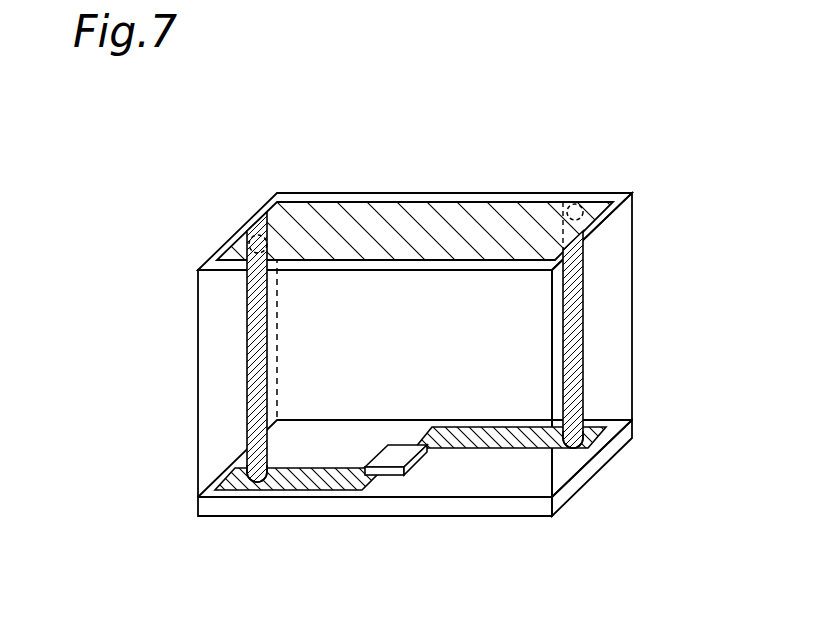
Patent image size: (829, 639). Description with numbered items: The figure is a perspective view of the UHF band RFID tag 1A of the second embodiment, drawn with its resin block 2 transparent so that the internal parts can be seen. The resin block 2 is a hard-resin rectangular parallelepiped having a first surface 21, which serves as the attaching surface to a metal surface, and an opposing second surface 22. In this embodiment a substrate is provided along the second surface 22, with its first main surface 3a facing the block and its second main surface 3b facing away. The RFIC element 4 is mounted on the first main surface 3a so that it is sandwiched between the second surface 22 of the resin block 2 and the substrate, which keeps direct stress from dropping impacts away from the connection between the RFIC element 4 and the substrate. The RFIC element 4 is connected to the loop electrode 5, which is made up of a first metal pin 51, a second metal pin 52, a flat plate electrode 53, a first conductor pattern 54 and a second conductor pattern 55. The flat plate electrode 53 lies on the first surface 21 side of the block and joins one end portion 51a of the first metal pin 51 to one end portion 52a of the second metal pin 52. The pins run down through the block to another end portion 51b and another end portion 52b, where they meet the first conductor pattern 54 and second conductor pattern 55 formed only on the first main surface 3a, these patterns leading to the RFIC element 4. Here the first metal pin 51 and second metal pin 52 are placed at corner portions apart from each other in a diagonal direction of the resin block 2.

The UHF band RFID tag 1A is at (213, 131).
The resin block 2 is at (620, 272).
The first surface 21 is at (622, 191).
The second surface 22 is at (565, 468).
The first main surface 3a is at (523, 482).
The second main surface 3b is at (505, 518).
The RFIC element 4 is at (393, 462).
The loop electrode 5 is at (432, 354).
The first metal pin 51 is at (253, 347).
The one end portion of the first metal pin 51a is at (247, 224).
The another end portion of the first metal pin 51b is at (252, 478).
The second metal pin 52 is at (575, 325).
The one end portion of the second metal pin 52a is at (574, 206).
The another end portion of the second metal pin 52b is at (575, 447).
The flat plate electrode 53 is at (330, 212).
The first conductor pattern 54 is at (312, 470).
The second conductor pattern 55 is at (485, 428).